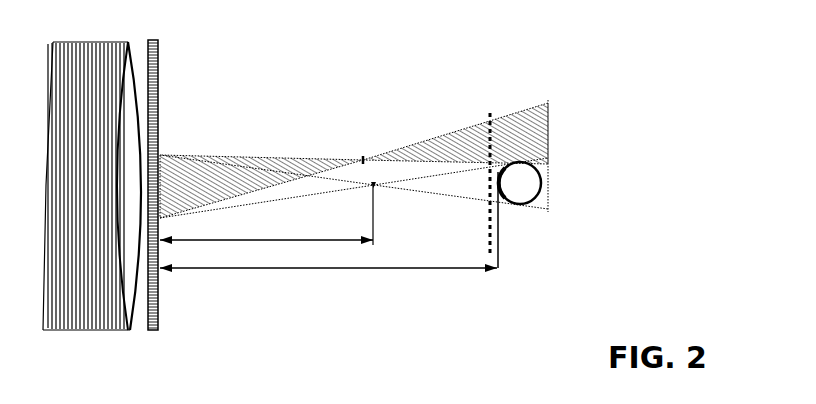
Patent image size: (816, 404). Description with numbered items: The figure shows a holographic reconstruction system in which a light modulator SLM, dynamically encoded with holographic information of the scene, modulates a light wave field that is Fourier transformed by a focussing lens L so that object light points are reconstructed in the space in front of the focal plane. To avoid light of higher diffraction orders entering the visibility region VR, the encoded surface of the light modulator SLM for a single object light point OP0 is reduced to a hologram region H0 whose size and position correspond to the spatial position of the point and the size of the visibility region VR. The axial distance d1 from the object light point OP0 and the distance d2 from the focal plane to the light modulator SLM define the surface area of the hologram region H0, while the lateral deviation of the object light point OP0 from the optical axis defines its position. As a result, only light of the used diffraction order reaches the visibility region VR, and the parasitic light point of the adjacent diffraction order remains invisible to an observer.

The focussing lens L is at (92, 170).
The light modulator SLM is at (180, 190).
The hologram region H0 is at (160, 163).
The object light point OP0 is at (354, 172).
The visibility region VR is at (496, 190).
The axial distance d1 is at (266, 225).
The distance from the focal plane to the light modulator d2 is at (328, 257).